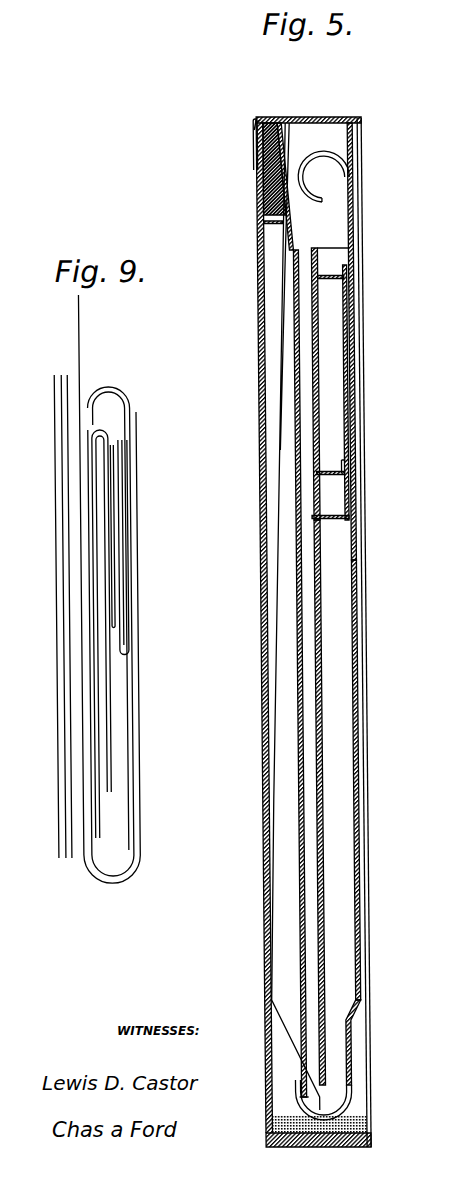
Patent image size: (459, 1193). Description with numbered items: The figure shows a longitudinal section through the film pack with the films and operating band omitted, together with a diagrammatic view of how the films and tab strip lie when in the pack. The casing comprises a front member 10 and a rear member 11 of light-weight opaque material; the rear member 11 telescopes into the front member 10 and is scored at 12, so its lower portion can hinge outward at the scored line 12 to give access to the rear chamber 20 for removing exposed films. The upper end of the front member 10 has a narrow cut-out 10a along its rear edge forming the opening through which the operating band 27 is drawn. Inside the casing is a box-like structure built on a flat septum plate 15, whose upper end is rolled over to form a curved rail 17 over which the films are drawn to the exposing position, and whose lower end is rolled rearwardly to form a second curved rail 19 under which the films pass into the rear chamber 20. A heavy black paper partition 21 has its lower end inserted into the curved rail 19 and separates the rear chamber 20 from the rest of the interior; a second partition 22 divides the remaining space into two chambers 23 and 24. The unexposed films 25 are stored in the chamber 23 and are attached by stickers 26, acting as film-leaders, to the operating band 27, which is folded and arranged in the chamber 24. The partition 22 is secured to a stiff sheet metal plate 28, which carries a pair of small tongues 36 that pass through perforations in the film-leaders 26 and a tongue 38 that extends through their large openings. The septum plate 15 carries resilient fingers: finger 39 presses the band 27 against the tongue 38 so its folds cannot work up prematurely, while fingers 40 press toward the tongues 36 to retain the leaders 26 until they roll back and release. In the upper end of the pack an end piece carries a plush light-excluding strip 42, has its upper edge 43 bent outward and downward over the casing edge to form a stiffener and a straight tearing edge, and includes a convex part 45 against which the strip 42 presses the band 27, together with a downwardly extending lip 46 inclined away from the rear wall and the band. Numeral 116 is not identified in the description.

In FIG. 5, the front member 10 is at (358, 170).
In FIG. 5, the narrow cut-out 10a is at (279, 117).
In FIG. 5, the rear member 11 is at (254, 360).
In FIG. 5, the scored line 12 is at (254, 317).
In FIG. 5, the septum plate 15 is at (342, 800).
In FIG. 5, the curved rail 17 is at (359, 127).
In FIG. 5, the second curved rail 19 is at (337, 1110).
In FIG. 5, the rear chamber 20 is at (262, 412).
In FIG. 5, the partition 21 is at (296, 748).
In FIG. 5, the second partition 22 is at (311, 720).
In FIG. 5, the chamber 23 is at (302, 558).
In FIG. 5, the chamber 24 is at (328, 687).
In FIG. 9, the unexposed films 25 is at (99, 812).
In FIG. 9, the stickers 26 is at (107, 533).
In FIG. 9, the operating band 27 is at (110, 687).
In FIG. 5, the stiff plate 28 is at (327, 353).
In FIG. 5, the small tongues 36 is at (348, 238).
In FIG. 5, the tongue 38 is at (323, 470).
In FIG. 5, the resilient finger 39 is at (335, 490).
In FIG. 5, the resilient fingers 40 is at (328, 276).
In FIG. 5, the light-excluding strip 42 is at (268, 153).
In FIG. 5, the upper edge 43 is at (253, 131).
In FIG. 5, the convex part 45 is at (271, 170).
In FIG. 5, the lip 46 is at (324, 119).
In FIG. 5, the partition 116 is at (281, 243).